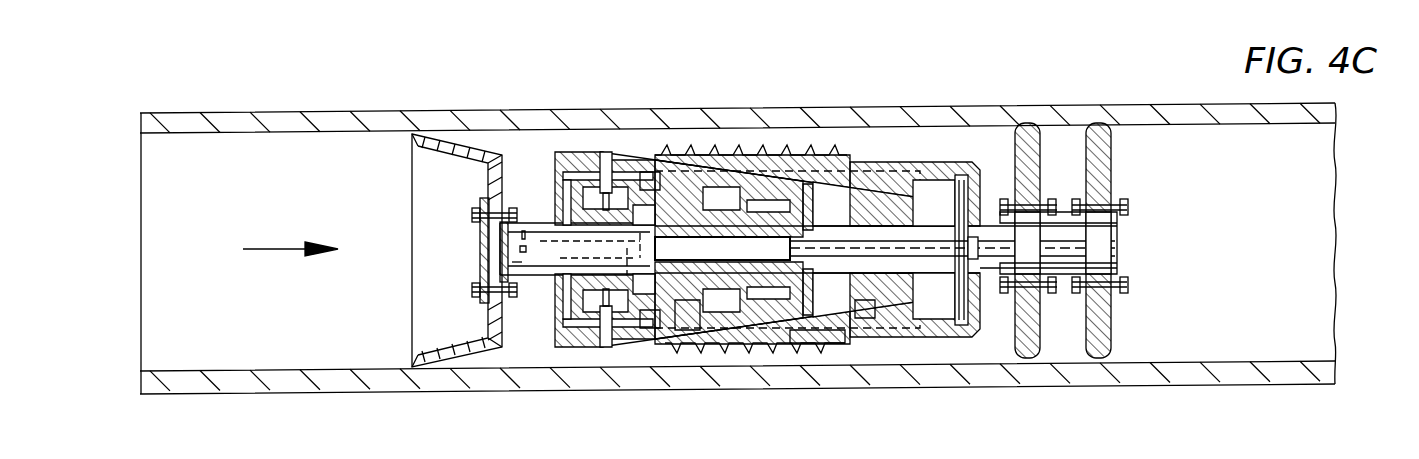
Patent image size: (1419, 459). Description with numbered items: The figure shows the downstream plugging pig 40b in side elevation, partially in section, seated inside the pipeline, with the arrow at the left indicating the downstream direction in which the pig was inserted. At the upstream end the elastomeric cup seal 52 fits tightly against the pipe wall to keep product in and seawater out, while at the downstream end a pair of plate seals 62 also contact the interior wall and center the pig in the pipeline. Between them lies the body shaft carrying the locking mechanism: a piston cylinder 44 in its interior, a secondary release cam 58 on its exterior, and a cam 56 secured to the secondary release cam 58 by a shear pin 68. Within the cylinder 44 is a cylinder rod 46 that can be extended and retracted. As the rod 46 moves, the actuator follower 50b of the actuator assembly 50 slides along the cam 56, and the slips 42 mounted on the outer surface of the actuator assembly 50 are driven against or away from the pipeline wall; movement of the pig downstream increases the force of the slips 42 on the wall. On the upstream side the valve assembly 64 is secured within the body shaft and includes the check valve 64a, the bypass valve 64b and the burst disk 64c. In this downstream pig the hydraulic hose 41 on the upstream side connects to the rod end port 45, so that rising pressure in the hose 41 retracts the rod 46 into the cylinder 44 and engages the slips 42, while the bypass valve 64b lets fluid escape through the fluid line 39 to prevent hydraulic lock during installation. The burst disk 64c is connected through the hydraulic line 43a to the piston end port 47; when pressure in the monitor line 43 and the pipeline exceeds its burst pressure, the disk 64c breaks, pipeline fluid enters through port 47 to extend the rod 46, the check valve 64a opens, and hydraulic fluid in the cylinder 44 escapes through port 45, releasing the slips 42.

The fluid line 39 is at (885, 165).
The downstream plugging pig 40b is at (945, 157).
The hydraulic hose 41 is at (578, 350).
The slips 42 is at (824, 343).
The monitor line 43 is at (506, 265).
The hydraulic line 43a is at (660, 190).
The piston cylinder 44 is at (731, 245).
The rod end port 45 is at (843, 215).
The cylinder rod 46 is at (978, 322).
The piston end port 47 is at (690, 178).
The actuator assembly 50 is at (939, 320).
The actuator follower 50b is at (888, 300).
The cup seals 52 is at (450, 141).
The cam 56 is at (630, 335).
The secondary release cam 58 is at (689, 343).
The plate seals 62 is at (1090, 347).
The valve assembly 64 is at (533, 222).
The check valve 64a is at (528, 257).
The bypass valve 64b is at (516, 237).
The burst disk 64c is at (526, 276).
The shear pin 68 is at (605, 158).